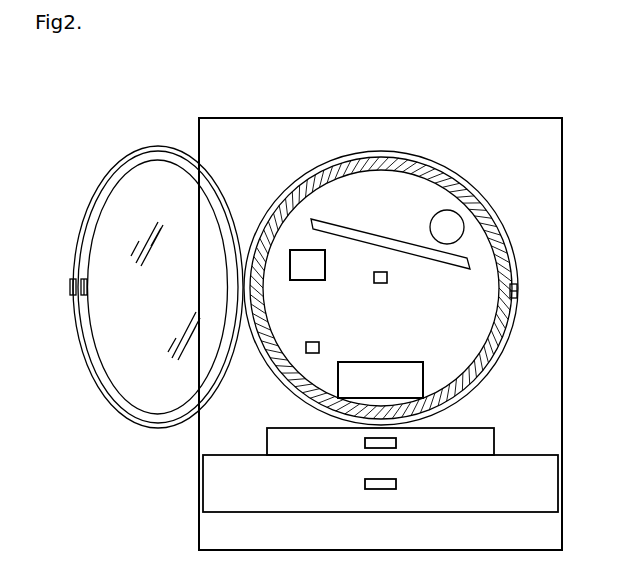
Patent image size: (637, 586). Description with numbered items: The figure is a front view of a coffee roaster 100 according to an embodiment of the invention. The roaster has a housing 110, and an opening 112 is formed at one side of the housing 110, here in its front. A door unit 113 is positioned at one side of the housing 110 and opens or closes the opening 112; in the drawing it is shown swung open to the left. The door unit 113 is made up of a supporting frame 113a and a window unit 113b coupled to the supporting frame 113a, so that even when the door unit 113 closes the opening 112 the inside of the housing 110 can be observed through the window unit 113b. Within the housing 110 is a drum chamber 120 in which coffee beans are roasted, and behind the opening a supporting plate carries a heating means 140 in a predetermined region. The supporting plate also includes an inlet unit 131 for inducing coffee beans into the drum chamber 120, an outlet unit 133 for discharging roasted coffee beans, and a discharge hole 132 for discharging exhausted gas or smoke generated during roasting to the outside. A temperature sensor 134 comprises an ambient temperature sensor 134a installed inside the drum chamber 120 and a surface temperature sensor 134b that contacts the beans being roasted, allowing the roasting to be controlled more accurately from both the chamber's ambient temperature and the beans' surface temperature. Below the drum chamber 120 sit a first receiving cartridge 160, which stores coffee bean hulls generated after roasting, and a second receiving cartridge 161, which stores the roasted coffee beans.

The coffee roaster 100 is at (187, 70).
The housing 110 is at (464, 118).
The opening 112 is at (415, 200).
The door unit 113 is at (141, 275).
The supporting frame 113a is at (153, 151).
The window unit 113b is at (150, 175).
The drum chamber 120 is at (302, 181).
The inlet unit 131 is at (312, 282).
The discharge hole 132 is at (430, 227).
The outlet unit 133 is at (422, 376).
The temperature sensor 134 is at (387, 312).
The ambient temperature sensor 134a is at (382, 284).
The surface temperature sensor 134b is at (320, 348).
The heating means 140 is at (467, 271).
The first receiving cartridge 160 is at (268, 438).
The second receiving cartridge 161 is at (228, 483).